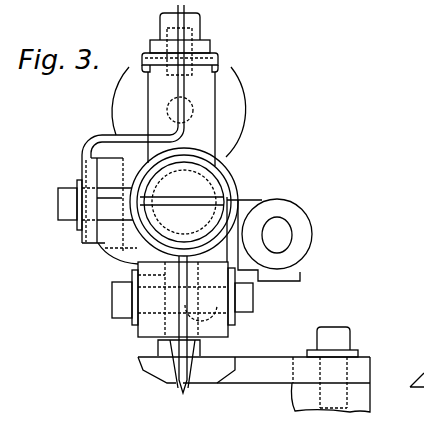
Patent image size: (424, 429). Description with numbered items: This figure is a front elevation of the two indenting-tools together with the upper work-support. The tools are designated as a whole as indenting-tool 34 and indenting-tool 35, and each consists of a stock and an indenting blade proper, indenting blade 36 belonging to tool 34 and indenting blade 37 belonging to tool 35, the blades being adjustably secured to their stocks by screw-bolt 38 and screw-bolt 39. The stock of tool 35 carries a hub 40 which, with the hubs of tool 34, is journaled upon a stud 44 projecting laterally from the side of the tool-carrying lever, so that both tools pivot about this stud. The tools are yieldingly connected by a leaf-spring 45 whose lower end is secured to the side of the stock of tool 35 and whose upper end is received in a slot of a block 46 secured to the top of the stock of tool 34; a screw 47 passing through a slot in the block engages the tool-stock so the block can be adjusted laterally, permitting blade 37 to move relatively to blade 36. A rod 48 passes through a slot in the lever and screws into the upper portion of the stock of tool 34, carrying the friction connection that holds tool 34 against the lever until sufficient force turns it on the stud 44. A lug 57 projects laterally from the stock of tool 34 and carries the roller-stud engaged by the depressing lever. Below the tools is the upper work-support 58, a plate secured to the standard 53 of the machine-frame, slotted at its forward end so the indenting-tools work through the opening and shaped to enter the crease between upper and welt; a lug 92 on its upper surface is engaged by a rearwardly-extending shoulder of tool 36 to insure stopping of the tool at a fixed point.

The leaf-spring 45 is at (176, 25).
The screw 47 is at (196, 30).
The block 46 is at (212, 50).
The rod 48 is at (186, 106).
The stud 44 is at (208, 164).
The hub 40 is at (232, 190).
The lug 57 is at (308, 228).
The indenting-tool 35 is at (113, 256).
The indenting-tool 34 is at (226, 330).
The screw-bolt 39 is at (115, 306).
The screw-bolt 38 is at (249, 292).
The lug 92 is at (160, 345).
The indenting blade 36 is at (196, 380).
The indenting blade 37 is at (176, 382).
The standard 53 is at (292, 390).
The upper work-support 58 is at (285, 349).